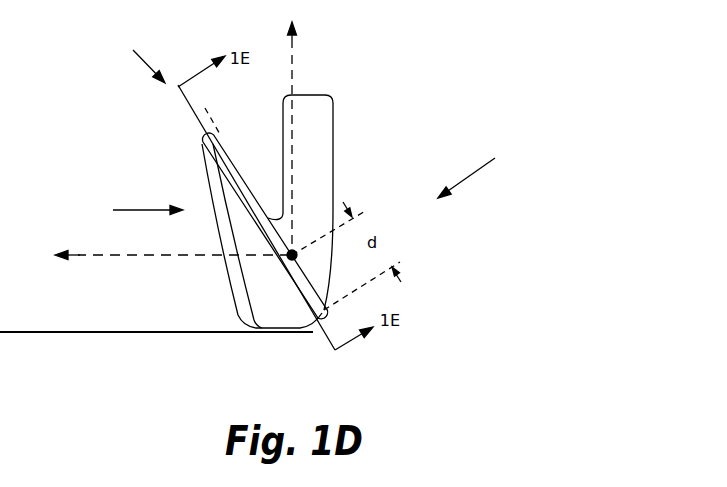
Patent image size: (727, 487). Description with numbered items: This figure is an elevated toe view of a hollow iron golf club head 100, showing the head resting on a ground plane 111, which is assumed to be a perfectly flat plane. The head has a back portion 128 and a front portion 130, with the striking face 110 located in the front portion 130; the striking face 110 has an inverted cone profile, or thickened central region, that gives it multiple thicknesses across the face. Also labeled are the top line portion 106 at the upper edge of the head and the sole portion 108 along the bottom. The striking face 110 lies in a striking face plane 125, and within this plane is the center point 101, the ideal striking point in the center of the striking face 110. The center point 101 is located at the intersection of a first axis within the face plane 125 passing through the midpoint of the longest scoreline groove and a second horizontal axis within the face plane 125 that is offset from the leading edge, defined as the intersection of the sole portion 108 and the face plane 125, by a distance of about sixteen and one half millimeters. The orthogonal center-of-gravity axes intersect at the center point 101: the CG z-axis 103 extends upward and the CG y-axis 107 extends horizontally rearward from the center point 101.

The hollow iron golf club head 100 is at (422, 230).
The center point 101 is at (287, 259).
The CG z-axis 103 is at (292, 70).
The top line portion 106 is at (138, 54).
The CG y-axis 107 is at (108, 256).
The sole portion 108 is at (277, 352).
The striking face 110 is at (232, 161).
The ground plane 111 is at (60, 332).
The striking face plane 125 is at (207, 115).
The back portion 128 is at (129, 208).
The front portion 130 is at (486, 171).